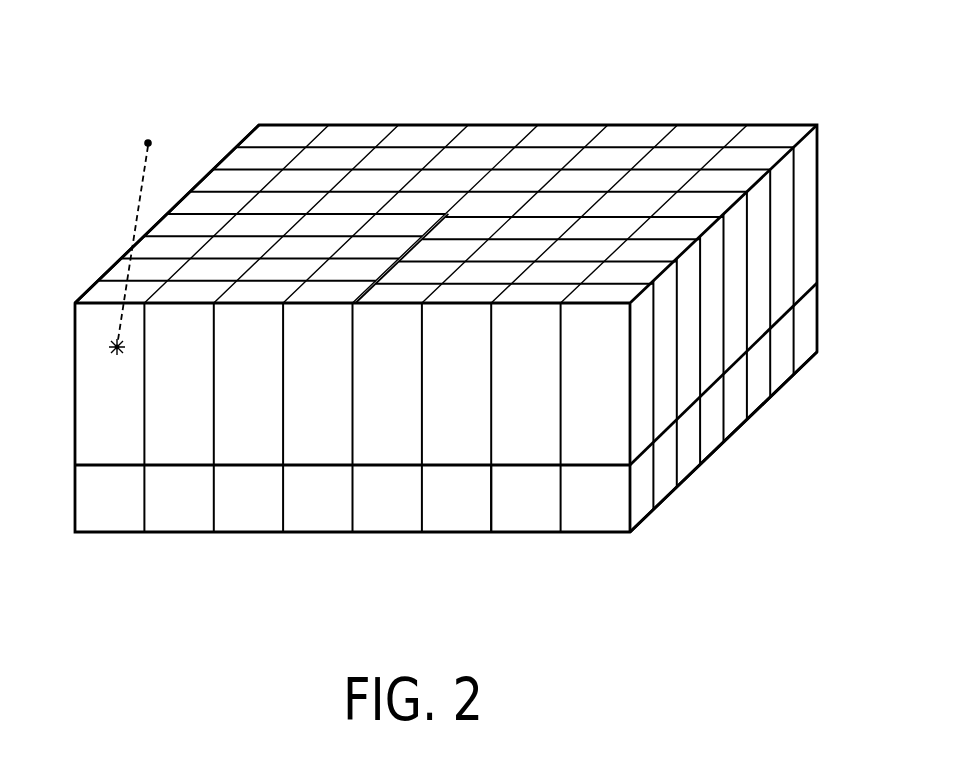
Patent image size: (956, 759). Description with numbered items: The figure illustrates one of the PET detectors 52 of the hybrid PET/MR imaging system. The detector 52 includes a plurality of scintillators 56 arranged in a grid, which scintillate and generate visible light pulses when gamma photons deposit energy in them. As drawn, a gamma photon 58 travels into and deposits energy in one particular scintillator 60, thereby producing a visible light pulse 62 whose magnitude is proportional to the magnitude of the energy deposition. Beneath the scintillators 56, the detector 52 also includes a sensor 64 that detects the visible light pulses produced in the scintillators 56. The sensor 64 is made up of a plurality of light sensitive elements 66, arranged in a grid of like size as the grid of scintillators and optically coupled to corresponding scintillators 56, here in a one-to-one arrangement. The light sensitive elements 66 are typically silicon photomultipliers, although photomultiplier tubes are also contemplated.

The detector 52 is at (449, 326).
The scintillators 56 is at (360, 128).
The gamma photon 58 is at (148, 139).
The scintillator 60 is at (95, 288).
The visible light pulse 62 is at (111, 345).
The sensor 64 is at (797, 497).
The light sensitive elements 66 is at (537, 517).